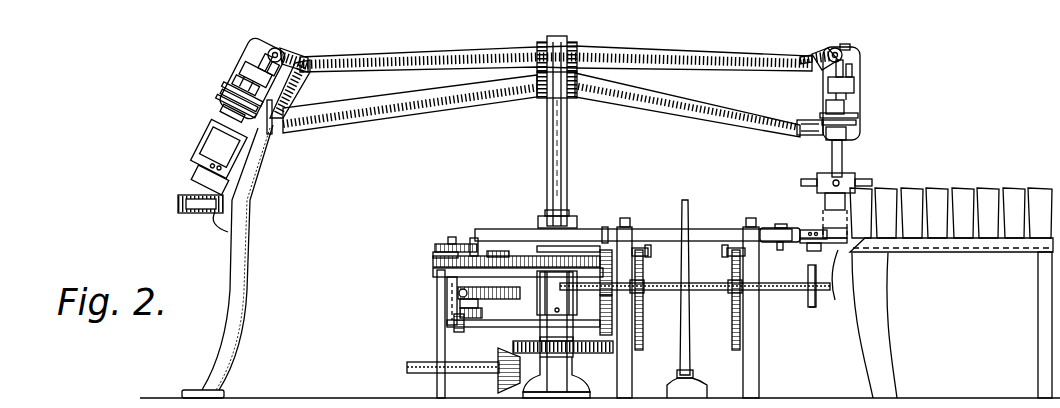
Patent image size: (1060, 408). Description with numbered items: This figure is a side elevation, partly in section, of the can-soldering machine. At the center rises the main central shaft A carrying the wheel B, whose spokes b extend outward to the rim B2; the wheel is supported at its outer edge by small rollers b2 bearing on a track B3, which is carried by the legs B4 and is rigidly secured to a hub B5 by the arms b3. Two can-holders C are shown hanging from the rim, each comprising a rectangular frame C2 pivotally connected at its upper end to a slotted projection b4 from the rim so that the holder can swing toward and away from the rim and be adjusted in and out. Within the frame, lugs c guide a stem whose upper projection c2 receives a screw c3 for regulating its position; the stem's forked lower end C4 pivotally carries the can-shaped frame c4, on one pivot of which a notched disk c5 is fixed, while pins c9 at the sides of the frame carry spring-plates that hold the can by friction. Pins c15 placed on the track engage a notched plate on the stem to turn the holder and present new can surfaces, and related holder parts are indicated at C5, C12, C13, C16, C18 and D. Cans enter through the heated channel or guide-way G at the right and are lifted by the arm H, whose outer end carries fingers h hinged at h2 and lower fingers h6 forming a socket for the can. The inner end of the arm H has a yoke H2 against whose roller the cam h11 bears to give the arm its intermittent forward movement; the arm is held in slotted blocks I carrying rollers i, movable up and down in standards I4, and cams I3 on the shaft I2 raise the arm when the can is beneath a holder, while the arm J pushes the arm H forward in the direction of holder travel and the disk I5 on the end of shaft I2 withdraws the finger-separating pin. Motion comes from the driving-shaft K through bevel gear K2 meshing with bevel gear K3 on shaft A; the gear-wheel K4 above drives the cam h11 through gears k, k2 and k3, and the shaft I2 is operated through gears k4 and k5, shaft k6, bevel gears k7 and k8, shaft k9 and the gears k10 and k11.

The main central shaft A is at (557, 154).
The wheel B is at (556, 51).
The rim B2 is at (821, 60).
The track B3 is at (803, 130).
The legs B4 is at (240, 256).
The hub B5 is at (538, 100).
The spokes b is at (609, 62).
The rollers b2 is at (283, 112).
The arms b3 is at (672, 106).
The projection b4 is at (282, 53).
The can-holder C is at (215, 140).
The rectangular frame C2 is at (895, 80).
The lower end of the stem C4 is at (858, 150).
The holder foot C5 is at (836, 205).
The plate C12 is at (225, 110).
The plate C13 is at (230, 88).
The plate C16 is at (290, 112).
The plate C18 is at (889, 108).
The lugs c is at (232, 92).
The projection c2 is at (268, 80).
The screw c3 is at (862, 71).
The frame c4 is at (945, 156).
The disk c5 is at (284, 182).
The pins c9 is at (222, 170).
The pins c15 is at (285, 125).
The bracket D is at (210, 222).
The channel or guide-way G is at (983, 252).
The arm H is at (706, 228).
The yoke H2 is at (482, 212).
The fingers h is at (830, 232).
The hinge point h2 is at (781, 250).
The lower fingers h6 is at (836, 252).
The cam h11 is at (448, 240).
The slotted blocks I is at (628, 240).
The shaft I2 is at (718, 222).
The cams I3 is at (644, 321).
The standards I4 is at (624, 372).
The disk I5 is at (810, 306).
The rollers i is at (650, 256).
The arm J is at (690, 336).
The driving-shaft K is at (425, 366).
The bevel gear-wheel K2 is at (500, 381).
The bevel gear K3 is at (580, 350).
The gear-wheel K4 is at (578, 232).
The gear k is at (505, 256).
The gear k2 is at (496, 250).
The gear k3 is at (431, 256).
The gear k4 is at (600, 282).
The gear k5 is at (600, 314).
The shaft k6 is at (497, 328).
The bevel-gear k7 is at (461, 333).
The bevel-gear k8 is at (482, 313).
The shaft k9 is at (460, 305).
The gear k10 is at (456, 293).
The gear k11 is at (538, 292).